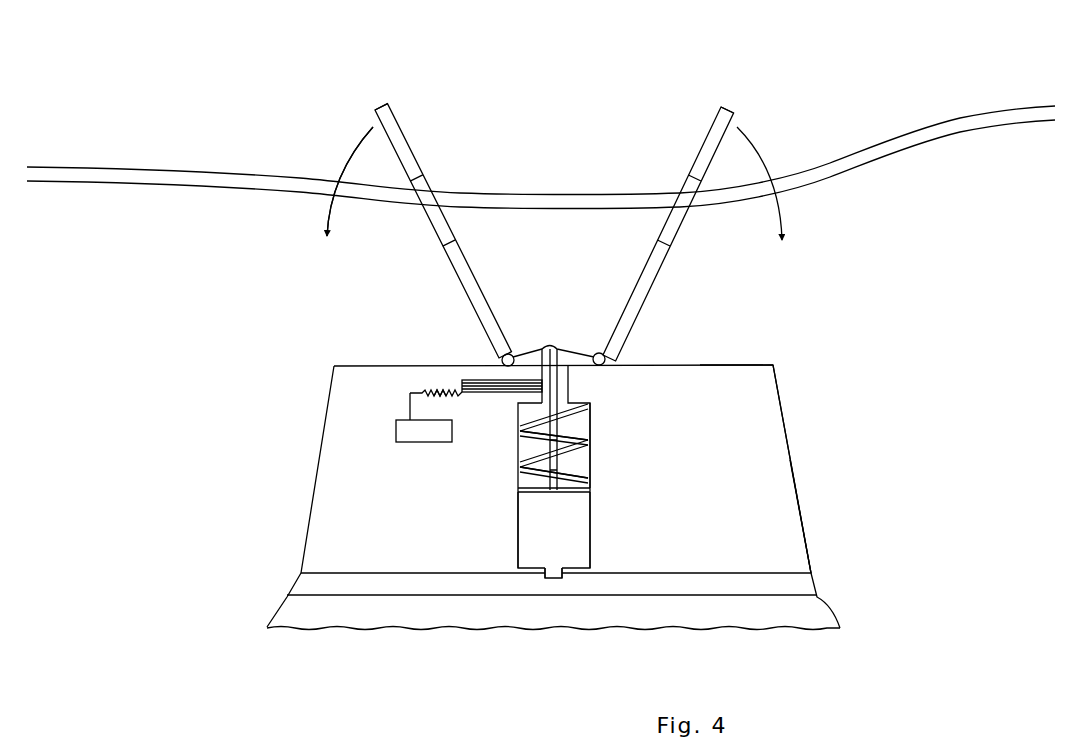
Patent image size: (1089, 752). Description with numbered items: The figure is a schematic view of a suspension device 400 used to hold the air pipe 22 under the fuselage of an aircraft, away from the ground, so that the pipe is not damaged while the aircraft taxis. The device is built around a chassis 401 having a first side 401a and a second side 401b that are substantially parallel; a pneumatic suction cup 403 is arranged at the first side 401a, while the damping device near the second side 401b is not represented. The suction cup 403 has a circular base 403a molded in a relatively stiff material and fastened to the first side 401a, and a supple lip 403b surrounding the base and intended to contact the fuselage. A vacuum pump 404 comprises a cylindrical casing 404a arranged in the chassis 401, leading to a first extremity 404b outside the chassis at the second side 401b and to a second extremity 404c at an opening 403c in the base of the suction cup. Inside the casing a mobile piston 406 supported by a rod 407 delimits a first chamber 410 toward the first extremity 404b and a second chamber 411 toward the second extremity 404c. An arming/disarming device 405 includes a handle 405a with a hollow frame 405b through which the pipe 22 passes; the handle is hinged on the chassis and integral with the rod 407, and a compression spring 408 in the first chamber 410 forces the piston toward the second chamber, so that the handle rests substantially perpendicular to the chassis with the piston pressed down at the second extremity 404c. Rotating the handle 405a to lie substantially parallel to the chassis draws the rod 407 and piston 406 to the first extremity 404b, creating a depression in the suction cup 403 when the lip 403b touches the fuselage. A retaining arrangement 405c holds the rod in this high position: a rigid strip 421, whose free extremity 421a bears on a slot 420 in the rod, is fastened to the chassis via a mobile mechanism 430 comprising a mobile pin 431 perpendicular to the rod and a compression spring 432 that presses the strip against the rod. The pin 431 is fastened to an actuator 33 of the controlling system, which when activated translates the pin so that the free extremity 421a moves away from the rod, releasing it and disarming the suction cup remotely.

The air pipe 22 is at (961, 119).
The actuator 33 is at (396, 430).
The suspension device 400 is at (902, 290).
The chassis 401 is at (790, 460).
The first side 401a is at (815, 548).
The second side 401b is at (766, 365).
The pneumatic suction cup 403 is at (281, 579).
The base 403a is at (822, 579).
The lip 403b is at (850, 612).
The opening 403c is at (541, 583).
The vacuum pump 404 is at (700, 365).
The cylindrical casing 404a is at (601, 420).
The first extremity 404b is at (569, 356).
The second extremity 404c is at (566, 571).
The arming/disarming device 405 is at (750, 91).
The handle 405a is at (727, 108).
The hollow frame 405b is at (444, 180).
The retaining arrangement 405c is at (360, 311).
The mobile piston 406 is at (590, 500).
The rod 407 is at (518, 462).
The compression spring 408 is at (601, 428).
The first chamber 410 is at (576, 466).
The cavity 411 is at (581, 533).
The slot 420 is at (518, 453).
The rigid strip 421 is at (470, 381).
The free extremity 421a is at (541, 362).
The mobile mechanism 430 is at (397, 391).
The mobile pin 431 is at (430, 391).
The compression spring 432 is at (440, 388).